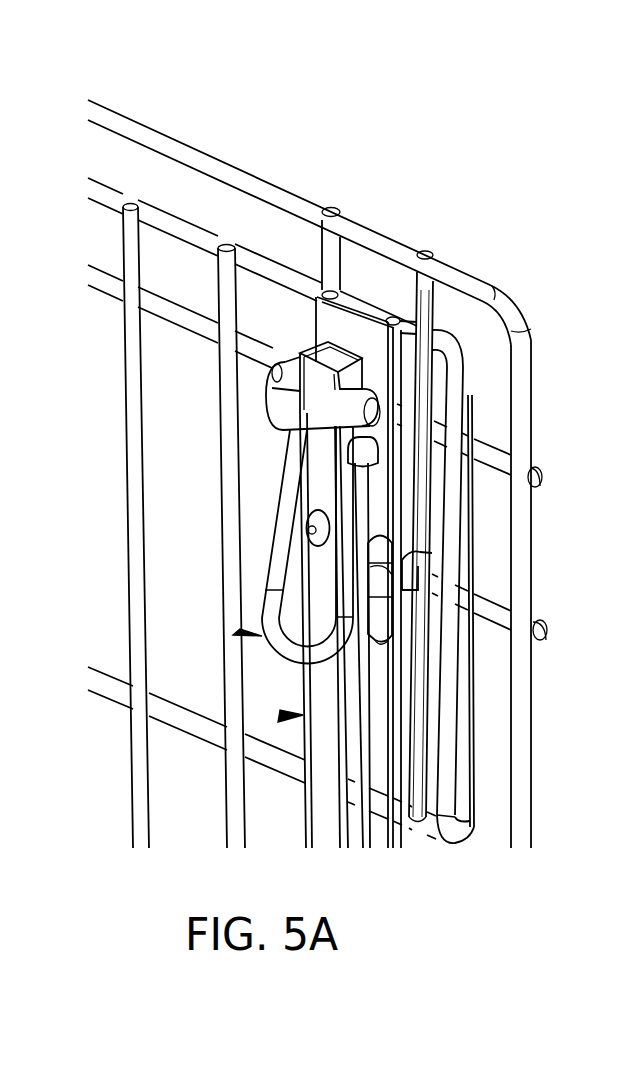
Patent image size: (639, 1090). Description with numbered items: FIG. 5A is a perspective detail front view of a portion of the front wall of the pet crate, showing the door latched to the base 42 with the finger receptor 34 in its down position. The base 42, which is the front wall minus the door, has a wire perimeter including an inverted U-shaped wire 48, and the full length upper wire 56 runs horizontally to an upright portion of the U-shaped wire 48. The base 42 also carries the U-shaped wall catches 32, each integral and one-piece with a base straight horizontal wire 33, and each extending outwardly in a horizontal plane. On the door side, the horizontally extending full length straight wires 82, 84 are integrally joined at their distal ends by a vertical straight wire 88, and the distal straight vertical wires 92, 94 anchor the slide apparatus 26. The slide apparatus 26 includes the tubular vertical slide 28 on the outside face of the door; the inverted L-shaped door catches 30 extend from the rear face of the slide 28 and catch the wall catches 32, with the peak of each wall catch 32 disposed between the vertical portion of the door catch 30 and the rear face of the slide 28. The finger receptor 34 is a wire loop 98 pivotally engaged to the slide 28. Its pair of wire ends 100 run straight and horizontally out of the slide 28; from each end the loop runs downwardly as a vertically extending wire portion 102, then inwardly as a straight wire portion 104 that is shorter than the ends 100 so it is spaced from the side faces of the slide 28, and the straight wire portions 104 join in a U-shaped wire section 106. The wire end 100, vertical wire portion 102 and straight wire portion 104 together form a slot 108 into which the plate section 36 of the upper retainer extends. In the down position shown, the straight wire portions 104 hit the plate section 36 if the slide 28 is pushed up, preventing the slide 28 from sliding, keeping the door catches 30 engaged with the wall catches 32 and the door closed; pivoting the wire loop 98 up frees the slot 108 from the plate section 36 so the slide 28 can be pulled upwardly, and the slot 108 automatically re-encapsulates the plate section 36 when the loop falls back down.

The slide apparatus 26 is at (278, 718).
The slide 28 is at (310, 802).
The door catches 30 is at (380, 640).
The wall catches 32 is at (413, 567).
The base straight horizontal wire 33 is at (540, 620).
The finger receptor 34 is at (233, 635).
The plate section 36 is at (287, 480).
The base 42 is at (140, 118).
The inverted U-shaped wire 48 is at (490, 278).
The upper wire 56 is at (490, 440).
The horizontally extending full length straight wire 82 is at (97, 692).
The horizontally extending full length straight wire 84 is at (100, 182).
The vertical straight wire 88 is at (473, 725).
The distal straight vertical wire 92 is at (333, 292).
The distal straight vertical wire 94 is at (393, 318).
The wire loop 98 is at (268, 553).
The wire ends 100 is at (292, 350).
The vertically extending wire portion 102 is at (218, 367).
The straight wire portion 104 is at (277, 427).
The U-shaped wire section 106 is at (277, 477).
The slot 108 is at (367, 438).